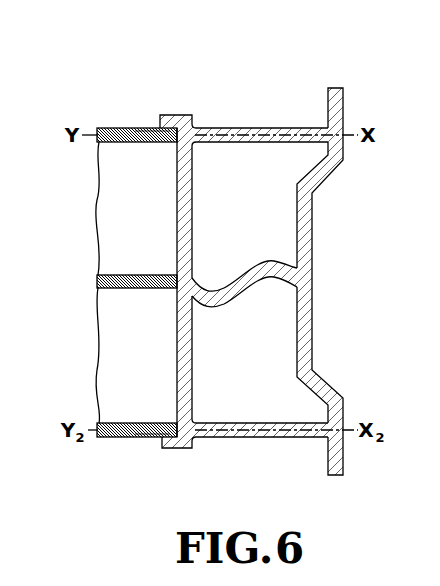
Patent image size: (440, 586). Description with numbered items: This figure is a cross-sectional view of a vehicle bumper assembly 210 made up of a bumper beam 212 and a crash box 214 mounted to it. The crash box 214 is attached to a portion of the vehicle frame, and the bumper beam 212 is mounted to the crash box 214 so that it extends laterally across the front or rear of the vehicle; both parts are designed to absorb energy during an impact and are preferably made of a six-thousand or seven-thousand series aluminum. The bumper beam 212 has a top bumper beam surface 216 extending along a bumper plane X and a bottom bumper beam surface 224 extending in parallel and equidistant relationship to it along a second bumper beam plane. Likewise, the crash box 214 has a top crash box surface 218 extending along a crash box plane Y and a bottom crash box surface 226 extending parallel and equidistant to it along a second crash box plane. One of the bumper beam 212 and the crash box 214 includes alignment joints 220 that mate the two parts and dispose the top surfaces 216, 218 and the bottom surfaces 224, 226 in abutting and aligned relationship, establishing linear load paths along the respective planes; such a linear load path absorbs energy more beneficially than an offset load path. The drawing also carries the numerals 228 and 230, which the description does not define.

The bumper assembly 210 is at (340, 297).
The bumper beam 212 is at (343, 160).
The crash box 214 is at (100, 127).
The top bumper beam surface 216 is at (285, 128).
The top crash box surface 218 is at (122, 127).
The alignment joint 220 is at (188, 108).
The bottom bumper beam surface 224 is at (250, 437).
The bottom crash box surface 226 is at (128, 437).
The tab 228 is at (167, 115).
The seal 230 is at (155, 124).